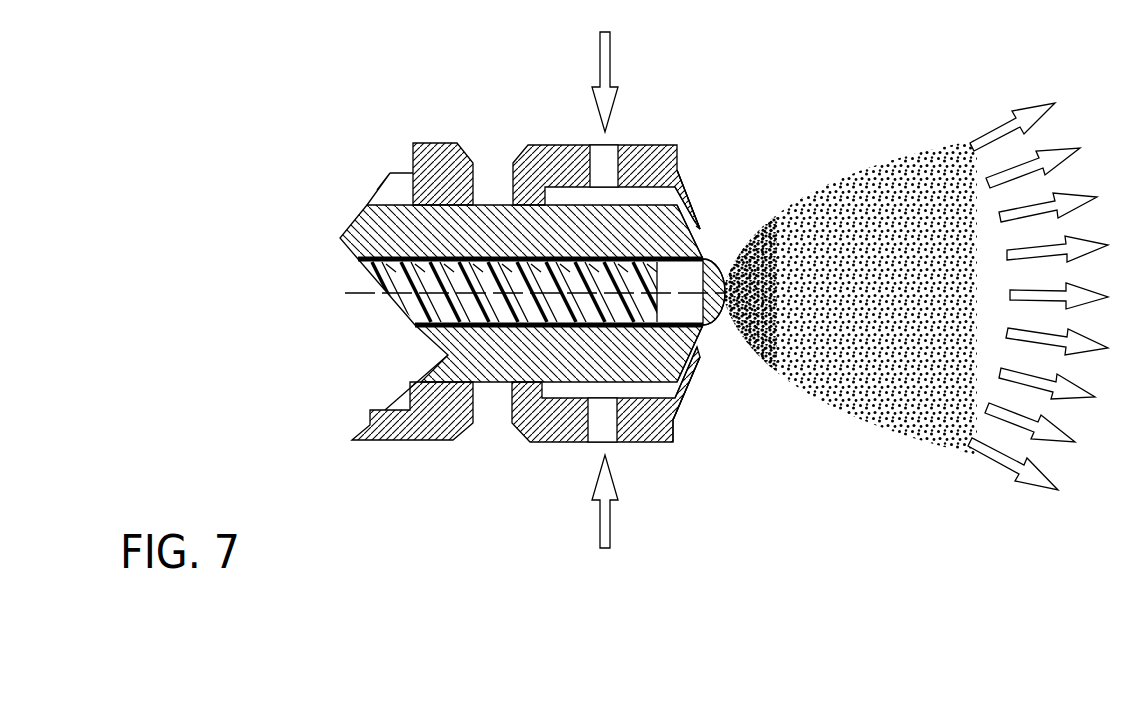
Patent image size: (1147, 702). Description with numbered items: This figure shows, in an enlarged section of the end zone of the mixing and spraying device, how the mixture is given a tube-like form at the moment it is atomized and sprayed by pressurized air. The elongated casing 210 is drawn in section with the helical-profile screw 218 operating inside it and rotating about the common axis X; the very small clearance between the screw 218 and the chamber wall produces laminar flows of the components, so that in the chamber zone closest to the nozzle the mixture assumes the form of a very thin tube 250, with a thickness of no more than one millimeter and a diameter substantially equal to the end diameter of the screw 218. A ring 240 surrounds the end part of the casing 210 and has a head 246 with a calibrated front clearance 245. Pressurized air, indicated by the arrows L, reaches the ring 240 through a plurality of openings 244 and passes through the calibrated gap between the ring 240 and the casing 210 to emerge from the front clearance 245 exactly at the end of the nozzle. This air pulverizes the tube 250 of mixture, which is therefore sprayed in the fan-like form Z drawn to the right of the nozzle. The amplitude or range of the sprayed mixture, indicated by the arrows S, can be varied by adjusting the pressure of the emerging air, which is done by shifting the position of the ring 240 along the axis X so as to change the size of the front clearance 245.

The elongated casing 210 is at (575, 362).
The helical-profile screw 218 is at (415, 303).
The ring 240 is at (655, 162).
The openings 244 is at (598, 145).
The front clearance 245 is at (699, 352).
The head 246 is at (698, 362).
The tube 250 is at (700, 228).
The axis X is at (355, 292).
The arrows indicating pressurized air L is at (605, 60).
The fan-like form Z is at (868, 157).
The arrows indicating spray range S is at (1062, 160).